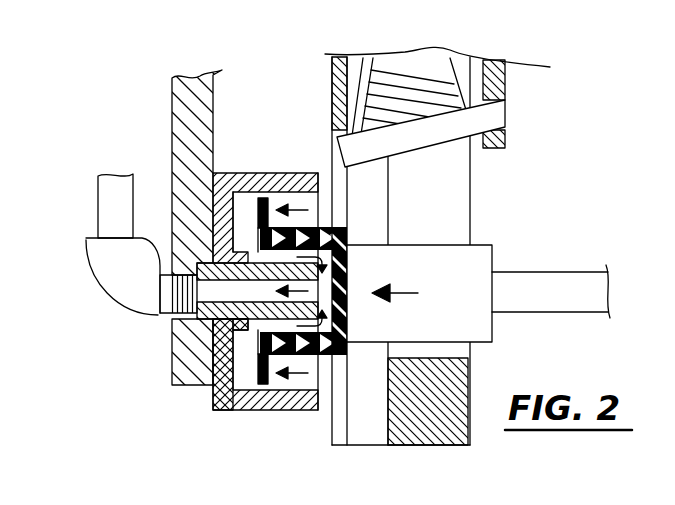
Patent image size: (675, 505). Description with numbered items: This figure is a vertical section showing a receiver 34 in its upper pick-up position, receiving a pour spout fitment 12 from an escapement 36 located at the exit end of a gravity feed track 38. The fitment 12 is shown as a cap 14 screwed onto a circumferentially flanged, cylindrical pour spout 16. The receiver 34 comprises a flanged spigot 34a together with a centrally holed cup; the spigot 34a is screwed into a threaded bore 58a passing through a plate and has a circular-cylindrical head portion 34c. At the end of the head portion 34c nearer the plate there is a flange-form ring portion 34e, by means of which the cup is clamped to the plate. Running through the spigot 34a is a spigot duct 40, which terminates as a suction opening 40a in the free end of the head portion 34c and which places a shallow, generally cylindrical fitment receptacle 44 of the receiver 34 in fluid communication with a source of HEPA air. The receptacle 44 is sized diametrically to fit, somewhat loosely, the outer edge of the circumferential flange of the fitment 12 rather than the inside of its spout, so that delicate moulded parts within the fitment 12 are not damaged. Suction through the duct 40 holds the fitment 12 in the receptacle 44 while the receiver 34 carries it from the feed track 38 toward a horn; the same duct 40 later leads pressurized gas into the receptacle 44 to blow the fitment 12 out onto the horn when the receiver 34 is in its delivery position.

The pour spout fitment 12 is at (246, 383).
The cap 14 is at (328, 358).
The pour spout 16 is at (258, 228).
The receiver 34 is at (257, 410).
The flanged spigot 34a is at (252, 327).
The head portion 34c is at (330, 278).
The flange-form ring portion 34e is at (237, 337).
The escapement 36 is at (360, 403).
The gravity feed track 38 is at (344, 65).
The spigot duct 40 is at (239, 313).
The suction opening 40a is at (347, 303).
The fitment receptacle 44 is at (226, 233).
The threaded bore 58a is at (208, 292).